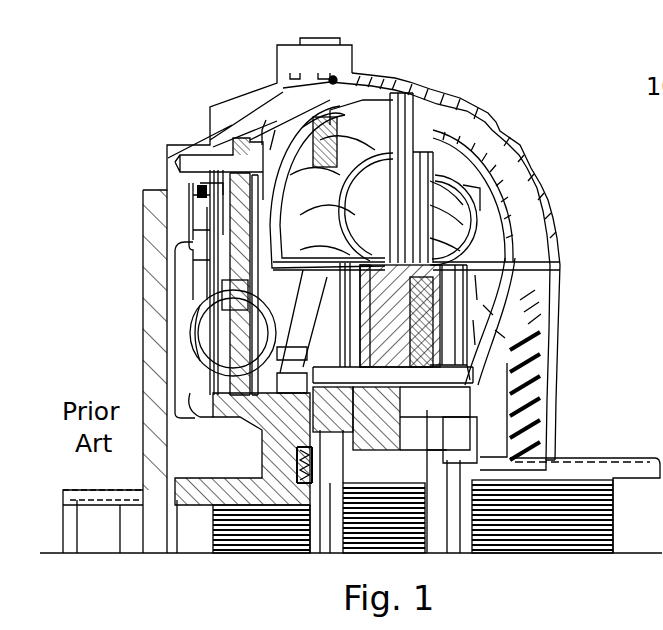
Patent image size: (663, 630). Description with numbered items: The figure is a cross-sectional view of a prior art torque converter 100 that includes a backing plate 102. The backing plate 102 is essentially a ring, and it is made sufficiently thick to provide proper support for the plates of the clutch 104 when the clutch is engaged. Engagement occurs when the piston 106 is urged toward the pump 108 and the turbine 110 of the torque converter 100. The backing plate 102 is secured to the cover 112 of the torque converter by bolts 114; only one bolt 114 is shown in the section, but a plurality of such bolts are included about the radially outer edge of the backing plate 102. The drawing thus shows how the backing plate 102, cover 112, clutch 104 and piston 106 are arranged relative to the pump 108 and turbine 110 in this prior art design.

The torque converter 100 is at (170, 117).
The backing plate 102 is at (238, 137).
The clutch 104 is at (203, 243).
The piston 106 is at (180, 362).
The pump 108 is at (510, 170).
The turbine 110 is at (380, 133).
The cover 112 is at (158, 232).
The bolt 114 is at (262, 155).